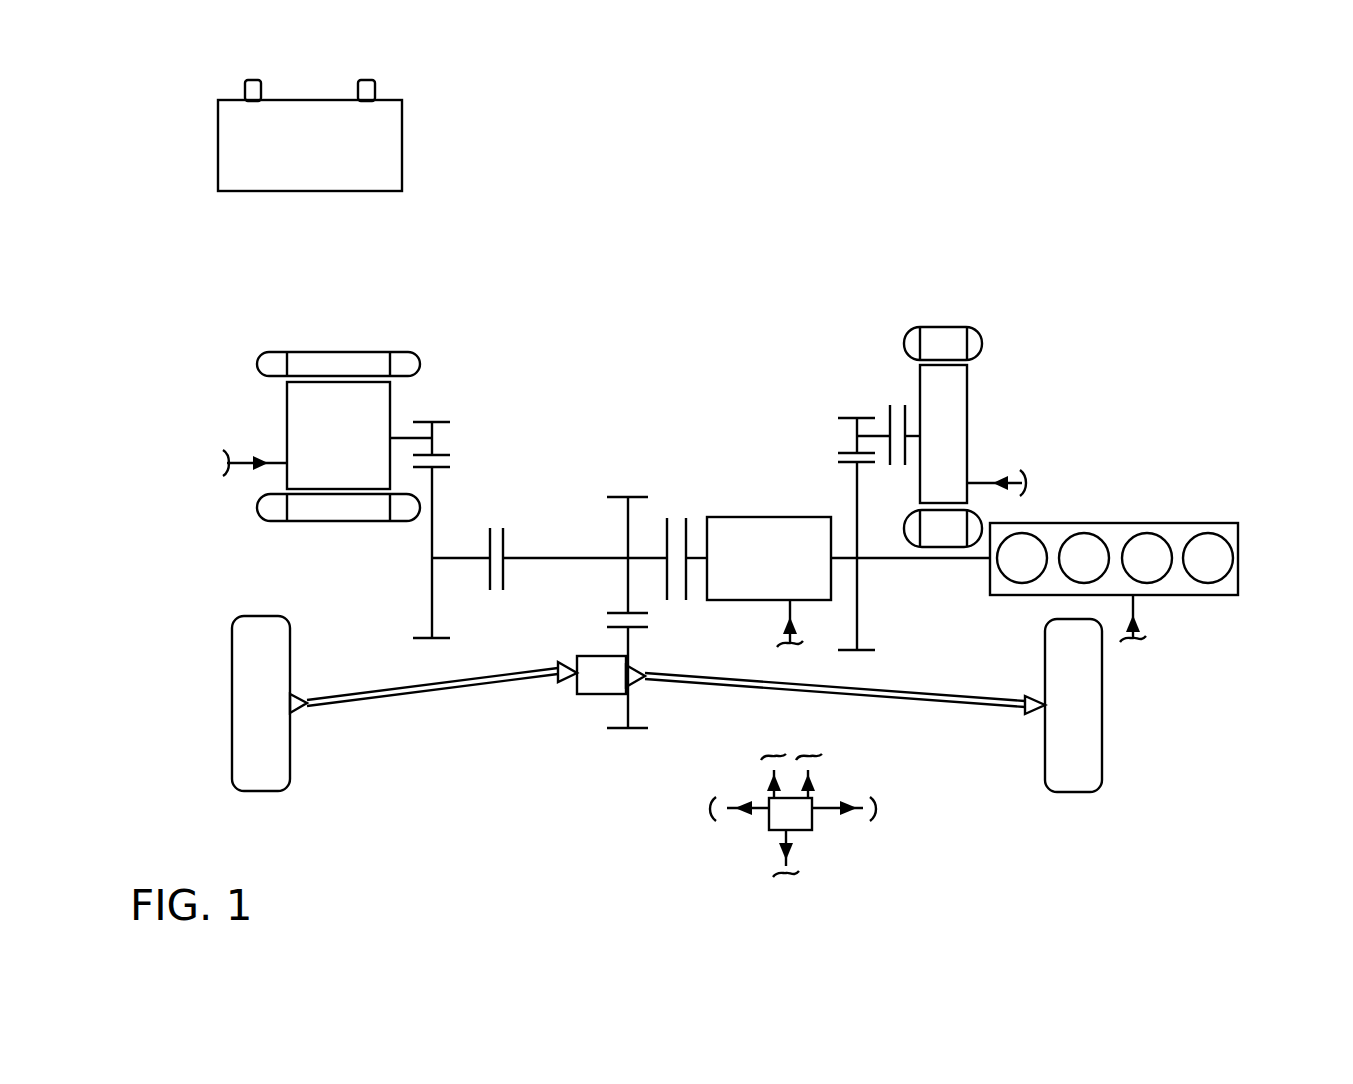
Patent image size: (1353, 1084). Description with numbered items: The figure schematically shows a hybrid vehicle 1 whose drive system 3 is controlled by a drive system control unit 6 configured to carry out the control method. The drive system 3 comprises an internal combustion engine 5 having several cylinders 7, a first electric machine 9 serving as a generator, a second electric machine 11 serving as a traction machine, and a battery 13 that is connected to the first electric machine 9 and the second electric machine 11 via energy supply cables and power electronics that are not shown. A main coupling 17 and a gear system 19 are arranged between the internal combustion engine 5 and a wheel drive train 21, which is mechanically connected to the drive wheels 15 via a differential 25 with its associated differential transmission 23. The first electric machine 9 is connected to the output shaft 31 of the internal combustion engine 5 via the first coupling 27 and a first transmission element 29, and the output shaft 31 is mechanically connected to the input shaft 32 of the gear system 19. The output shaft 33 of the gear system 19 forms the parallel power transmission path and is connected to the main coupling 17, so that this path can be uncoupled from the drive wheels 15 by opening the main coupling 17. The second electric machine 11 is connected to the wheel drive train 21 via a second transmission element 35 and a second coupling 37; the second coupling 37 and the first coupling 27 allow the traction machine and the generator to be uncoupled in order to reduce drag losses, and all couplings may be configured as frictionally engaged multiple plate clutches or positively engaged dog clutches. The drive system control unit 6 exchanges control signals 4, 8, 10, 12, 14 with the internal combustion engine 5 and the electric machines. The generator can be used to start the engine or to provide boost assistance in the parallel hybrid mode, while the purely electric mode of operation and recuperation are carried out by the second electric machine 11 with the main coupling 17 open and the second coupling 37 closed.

The hybrid vehicle 1 is at (1090, 222).
The drive system 3 is at (1205, 390).
The ground / crankshaft signal 4 is at (790, 606).
The internal combustion engine 5 is at (1238, 533).
The drive system control unit 6 is at (780, 820).
The cylinder 7 is at (1208, 565).
The control signal 8 is at (1133, 608).
The first electric machine 9 is at (993, 390).
The control signal 10 is at (988, 483).
The second electric machine 11 is at (236, 408).
The control signal 12 is at (268, 463).
The battery 13 is at (401, 148).
The control signal 14 is at (863, 808).
The drive wheel 15 is at (233, 704).
The main coupling K0 17 is at (686, 532).
The gear system 19 is at (768, 517).
The wheel drive train 21 is at (628, 583).
The differential transmission 23 is at (635, 626).
The differential 25 is at (590, 694).
The first coupling K1 27 is at (890, 418).
The transmission element 29 is at (845, 453).
The output shaft of the internal combustion engine 31 is at (890, 558).
The input shaft of the gear system 32 is at (844, 558).
The output shaft of the gear system 33 is at (697, 558).
The transmission element 35 is at (442, 455).
The second coupling K2 37 is at (503, 542).